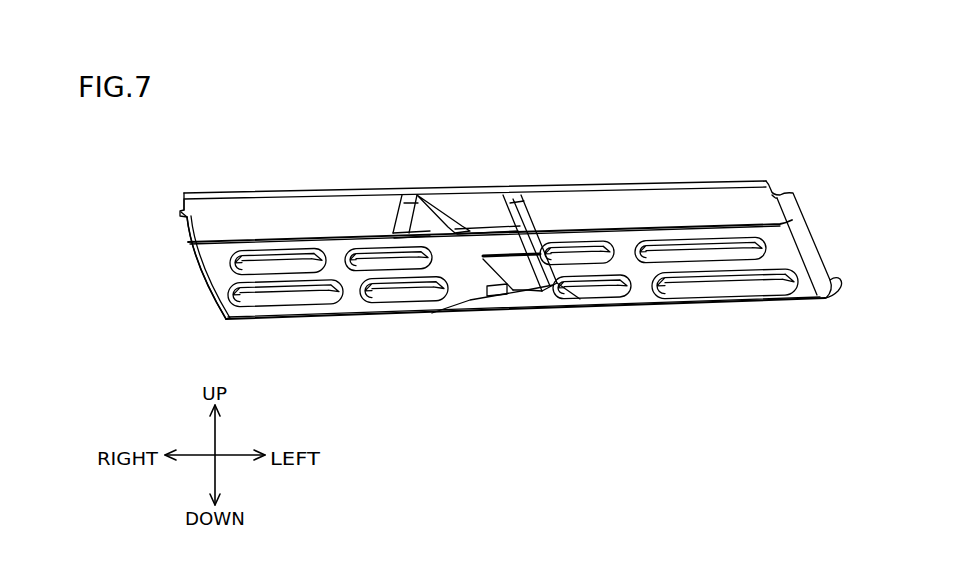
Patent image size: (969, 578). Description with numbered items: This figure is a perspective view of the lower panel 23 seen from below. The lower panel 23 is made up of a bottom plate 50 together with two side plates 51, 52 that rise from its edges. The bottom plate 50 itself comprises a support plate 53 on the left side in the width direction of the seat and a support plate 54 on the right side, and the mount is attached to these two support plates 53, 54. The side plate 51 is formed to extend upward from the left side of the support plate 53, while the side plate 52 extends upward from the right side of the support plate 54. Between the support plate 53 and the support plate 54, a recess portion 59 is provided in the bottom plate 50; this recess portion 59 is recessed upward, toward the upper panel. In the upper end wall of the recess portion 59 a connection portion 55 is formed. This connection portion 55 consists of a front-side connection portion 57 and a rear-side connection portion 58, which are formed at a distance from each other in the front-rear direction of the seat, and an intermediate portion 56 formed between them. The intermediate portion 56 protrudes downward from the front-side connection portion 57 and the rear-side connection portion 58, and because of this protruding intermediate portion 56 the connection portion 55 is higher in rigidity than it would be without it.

The lower panel 23 is at (502, 210).
The bottom plate 50 is at (640, 276).
The side plate 51 is at (810, 228).
The side plate 52 is at (183, 236).
The support plate 53 is at (735, 265).
The support plate 54 is at (292, 282).
The connection portion 55 is at (486, 323).
The intermediate portion 56 is at (482, 233).
The front-side connection portion 57 is at (458, 204).
The rear-side connection portion 58 is at (522, 276).
The recess portion 59 is at (548, 356).